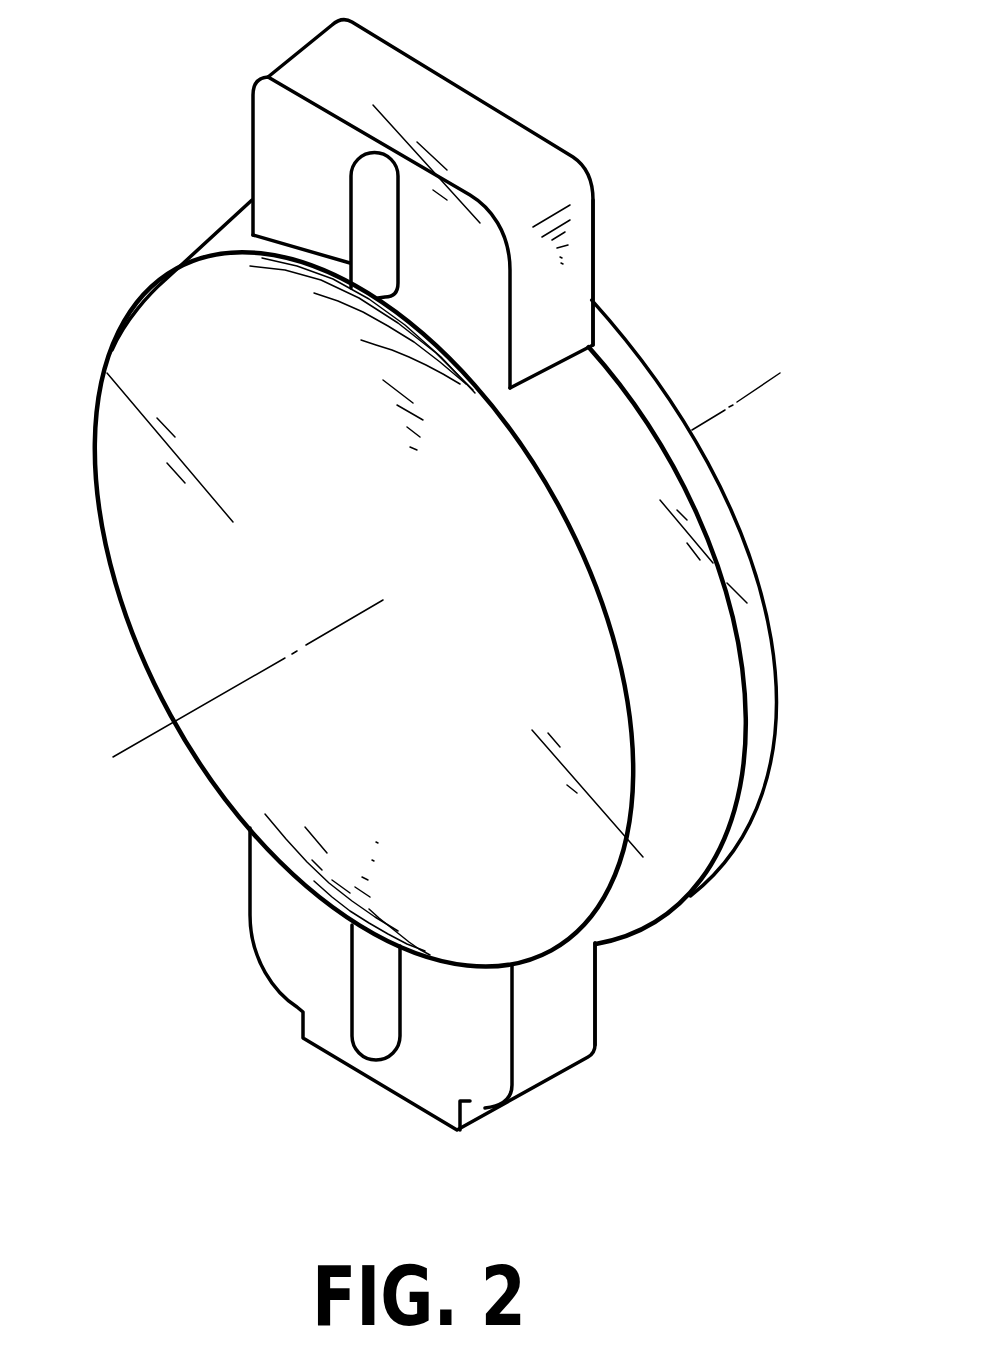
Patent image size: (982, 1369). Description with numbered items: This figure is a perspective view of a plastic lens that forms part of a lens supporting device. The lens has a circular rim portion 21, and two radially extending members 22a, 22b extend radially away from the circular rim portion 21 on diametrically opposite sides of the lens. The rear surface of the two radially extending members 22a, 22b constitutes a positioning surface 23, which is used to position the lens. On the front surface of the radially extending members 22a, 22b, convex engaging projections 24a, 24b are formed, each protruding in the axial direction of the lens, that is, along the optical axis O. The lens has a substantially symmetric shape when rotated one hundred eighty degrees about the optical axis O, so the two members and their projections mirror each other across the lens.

The circular rim portion 21 is at (745, 556).
The radially extending member 22a is at (490, 287).
The radially extending member 22b is at (437, 1063).
The positioning surface 23 is at (592, 187).
The convex engaging projection 24a is at (362, 175).
The convex engaging projection 24b is at (362, 1030).
The optical axis O is at (132, 747).